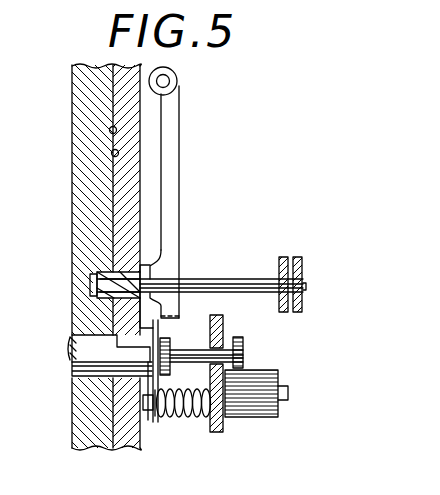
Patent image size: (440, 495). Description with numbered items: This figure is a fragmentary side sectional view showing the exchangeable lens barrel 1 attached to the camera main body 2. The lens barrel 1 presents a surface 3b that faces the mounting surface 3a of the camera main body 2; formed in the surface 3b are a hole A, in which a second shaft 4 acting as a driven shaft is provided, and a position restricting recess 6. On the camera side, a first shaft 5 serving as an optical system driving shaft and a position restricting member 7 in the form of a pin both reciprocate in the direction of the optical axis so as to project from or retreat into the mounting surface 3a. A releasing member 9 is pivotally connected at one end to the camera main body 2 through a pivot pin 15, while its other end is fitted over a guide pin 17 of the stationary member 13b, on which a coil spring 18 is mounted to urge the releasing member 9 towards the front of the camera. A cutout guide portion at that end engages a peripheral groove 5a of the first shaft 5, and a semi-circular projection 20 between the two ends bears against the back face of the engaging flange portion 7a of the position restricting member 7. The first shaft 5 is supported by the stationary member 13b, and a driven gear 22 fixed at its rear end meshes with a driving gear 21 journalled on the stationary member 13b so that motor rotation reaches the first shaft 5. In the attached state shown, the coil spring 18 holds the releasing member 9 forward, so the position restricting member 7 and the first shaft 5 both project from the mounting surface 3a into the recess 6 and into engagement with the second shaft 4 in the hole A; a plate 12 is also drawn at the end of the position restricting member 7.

The exchangeable lens barrel 1 is at (73, 449).
The camera main body 2 is at (128, 449).
The mounting surface 3a is at (116, 130).
The surface to be mounted 3b is at (112, 152).
The second shaft 4 is at (73, 364).
The first shaft 5 is at (150, 326).
The peripheral groove 5a is at (172, 344).
The position restricting recess 6 is at (85, 293).
The position restricting member 7 is at (238, 278).
The engaging flange portion 7a is at (90, 279).
The releasing member 9 is at (181, 184).
The plate 12 is at (303, 297).
The stationary member 13b is at (212, 432).
The pivot pin 15 is at (170, 81).
The guide pin 17 is at (148, 411).
The coil spring 18 is at (178, 420).
The semi-circular projection 20 is at (165, 256).
The driving gear 21 is at (256, 418).
The driven gear 22 is at (244, 352).
The hole A is at (73, 342).